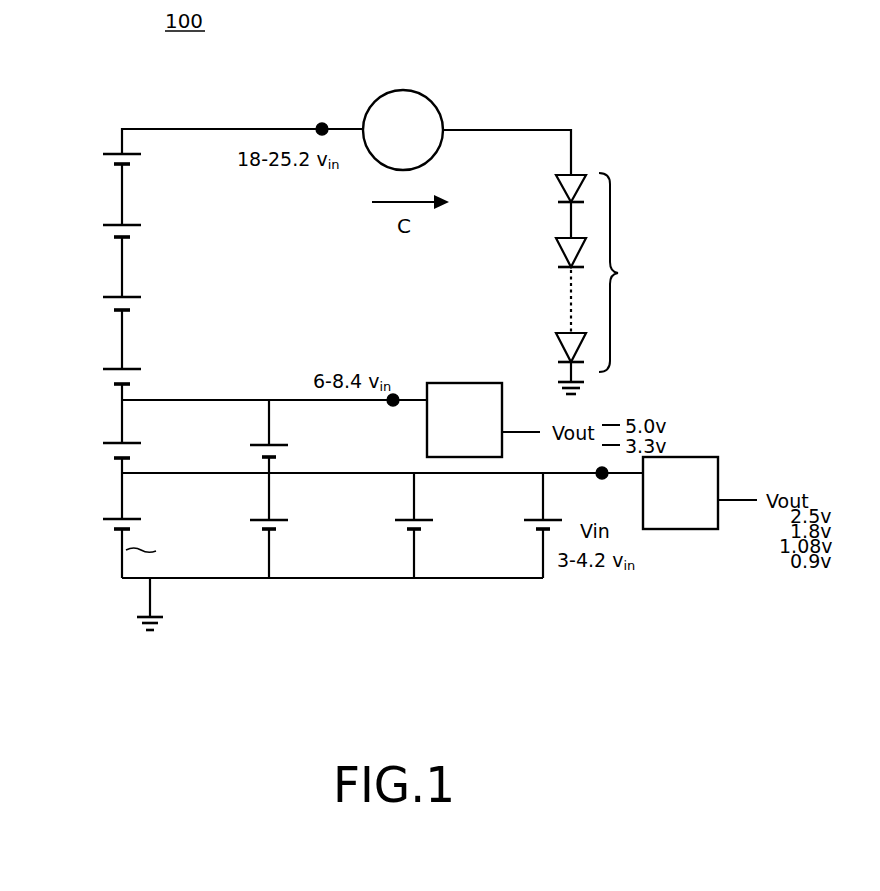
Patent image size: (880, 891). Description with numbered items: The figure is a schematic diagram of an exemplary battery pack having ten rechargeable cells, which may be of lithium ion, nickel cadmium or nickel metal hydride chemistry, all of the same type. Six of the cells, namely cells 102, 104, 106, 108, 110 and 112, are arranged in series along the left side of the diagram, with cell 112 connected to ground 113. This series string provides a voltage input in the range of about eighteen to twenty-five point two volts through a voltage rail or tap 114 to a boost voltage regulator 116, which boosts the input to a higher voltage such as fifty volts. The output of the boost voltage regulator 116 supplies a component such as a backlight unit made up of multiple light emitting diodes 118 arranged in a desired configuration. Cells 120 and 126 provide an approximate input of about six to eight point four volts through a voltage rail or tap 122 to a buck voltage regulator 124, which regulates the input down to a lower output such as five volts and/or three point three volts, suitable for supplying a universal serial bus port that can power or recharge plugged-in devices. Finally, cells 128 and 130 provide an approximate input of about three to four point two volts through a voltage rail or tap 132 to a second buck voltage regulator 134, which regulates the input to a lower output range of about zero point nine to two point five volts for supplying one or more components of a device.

The battery rechargeable cell 102 is at (104, 160).
The battery rechargeable cell 104 is at (104, 234).
The battery rechargeable cell 106 is at (104, 305).
The battery rechargeable cell 108 is at (104, 378).
The battery rechargeable cell 110 is at (104, 451).
The battery rechargeable cell 112 is at (104, 524).
The ground 113 is at (140, 632).
The voltage rail or tap 114 is at (320, 122).
The boost voltage regulator 116 is at (438, 114).
The light emitting diodes 118 is at (618, 273).
The battery rechargeable cell 120 is at (283, 451).
The voltage rail or tap 122 is at (394, 393).
The buck voltage regulator 124 is at (477, 383).
The battery rechargeable cell 126 is at (283, 527).
The battery rechargeable cell 128 is at (430, 524).
The battery rechargeable cell 130 is at (530, 528).
The voltage rail or tap 132 is at (600, 478).
The buck voltage regulator 134 is at (682, 530).